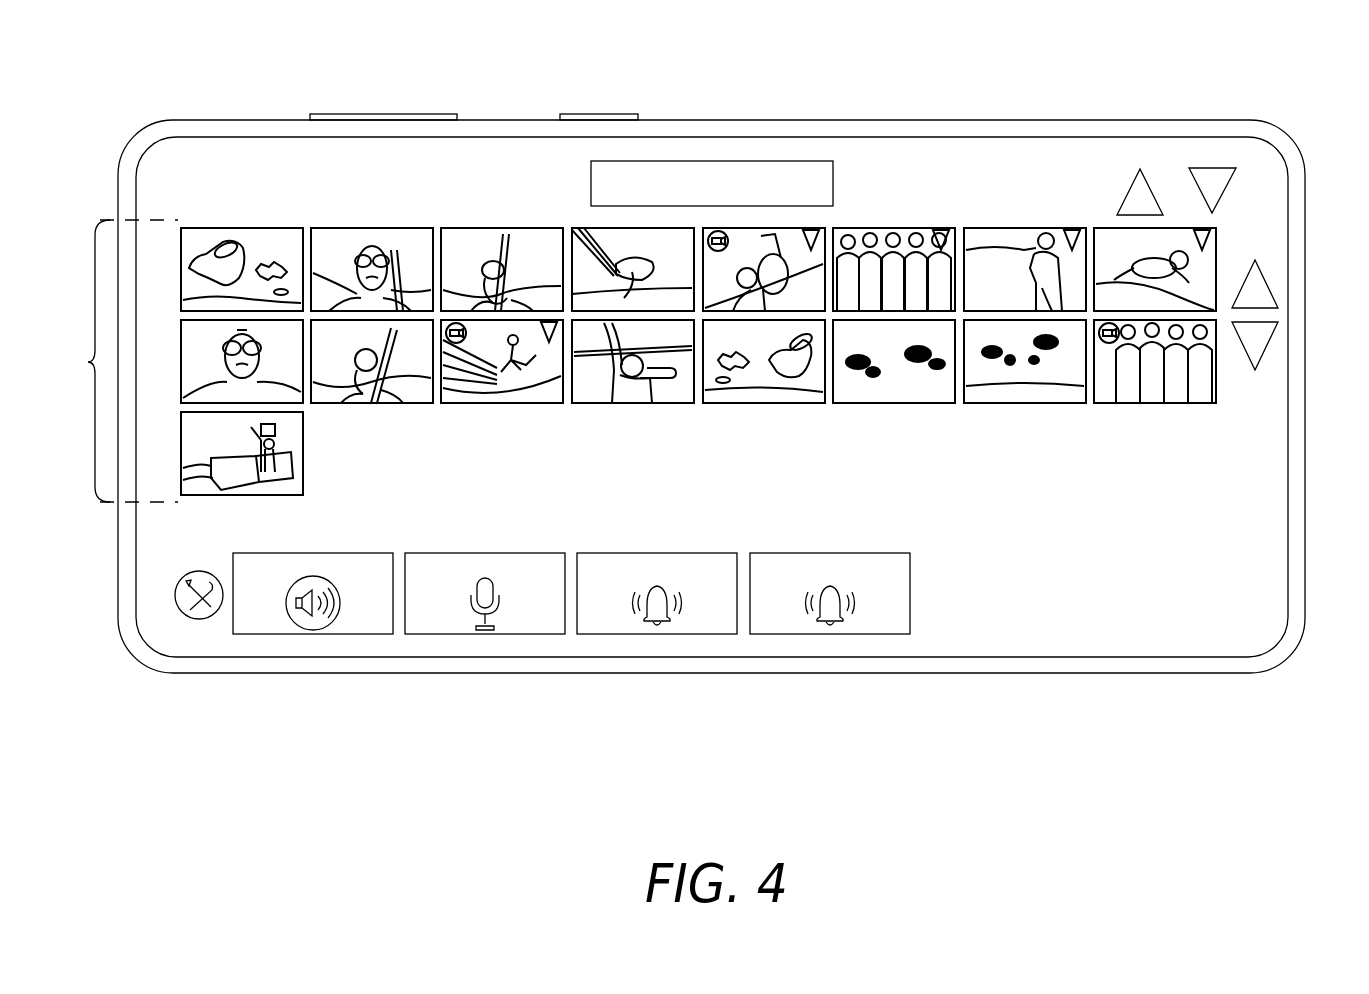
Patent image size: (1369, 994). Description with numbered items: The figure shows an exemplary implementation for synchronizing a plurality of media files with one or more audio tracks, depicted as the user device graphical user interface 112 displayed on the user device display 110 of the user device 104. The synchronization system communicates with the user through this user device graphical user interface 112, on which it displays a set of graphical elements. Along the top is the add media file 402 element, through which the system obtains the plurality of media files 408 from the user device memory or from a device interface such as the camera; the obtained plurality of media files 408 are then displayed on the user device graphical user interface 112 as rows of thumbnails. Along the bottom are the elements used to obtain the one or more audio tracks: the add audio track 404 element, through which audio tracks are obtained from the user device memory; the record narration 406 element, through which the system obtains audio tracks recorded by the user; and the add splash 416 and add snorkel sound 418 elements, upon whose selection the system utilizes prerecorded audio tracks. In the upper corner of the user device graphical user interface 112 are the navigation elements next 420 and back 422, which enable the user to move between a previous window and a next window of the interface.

The user device 104 is at (185, 118).
The user device display 110 is at (1013, 137).
The user device graphical user interface 112 is at (1263, 188).
The add media file 402 is at (765, 161).
The add audio track 404 is at (253, 636).
The record narration 406 is at (425, 636).
The plurality of media files 408 is at (88, 362).
The add splash 416 is at (598, 636).
The add snorkel sound 418 is at (768, 636).
The next 420 is at (1232, 177).
The back 422 is at (1123, 200).